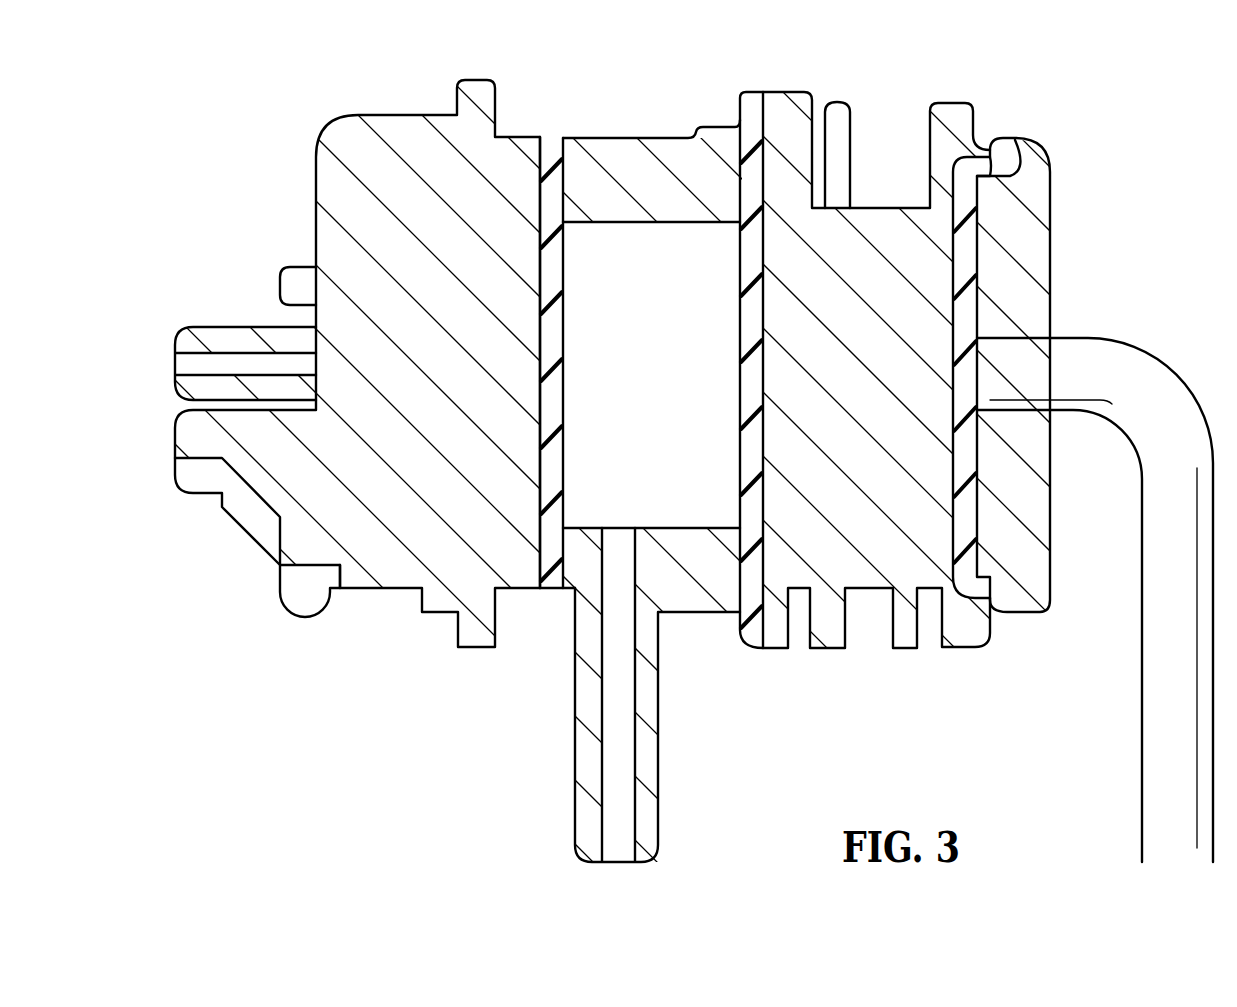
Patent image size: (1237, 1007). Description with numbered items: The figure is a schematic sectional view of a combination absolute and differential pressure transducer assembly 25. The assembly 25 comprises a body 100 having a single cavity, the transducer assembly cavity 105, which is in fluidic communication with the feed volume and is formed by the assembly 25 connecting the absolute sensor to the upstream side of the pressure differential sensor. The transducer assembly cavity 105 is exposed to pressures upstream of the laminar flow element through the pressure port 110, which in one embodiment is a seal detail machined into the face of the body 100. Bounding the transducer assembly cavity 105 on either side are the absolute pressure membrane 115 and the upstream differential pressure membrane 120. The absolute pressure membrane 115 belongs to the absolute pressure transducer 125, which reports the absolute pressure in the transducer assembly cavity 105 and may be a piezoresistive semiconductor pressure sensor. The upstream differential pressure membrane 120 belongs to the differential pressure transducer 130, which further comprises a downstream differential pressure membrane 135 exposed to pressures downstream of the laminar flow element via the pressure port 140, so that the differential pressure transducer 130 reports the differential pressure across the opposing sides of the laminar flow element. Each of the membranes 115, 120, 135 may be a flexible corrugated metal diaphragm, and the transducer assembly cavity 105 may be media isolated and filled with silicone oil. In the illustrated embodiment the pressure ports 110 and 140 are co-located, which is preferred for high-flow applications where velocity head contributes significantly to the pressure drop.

The combination absolute and differential pressure transducer assembly 25 is at (1183, 105).
The body 100 is at (312, 178).
The transducer assembly cavity 105 is at (675, 387).
The pressure port 110 is at (618, 538).
The absolute pressure membrane 115 is at (550, 147).
The upstream differential pressure membrane 120 is at (755, 101).
The absolute pressure transducer 125 is at (397, 125).
The differential pressure transducer 130 is at (886, 216).
The downstream differential pressure membrane 135 is at (1004, 147).
The pressure port 140 is at (1068, 352).